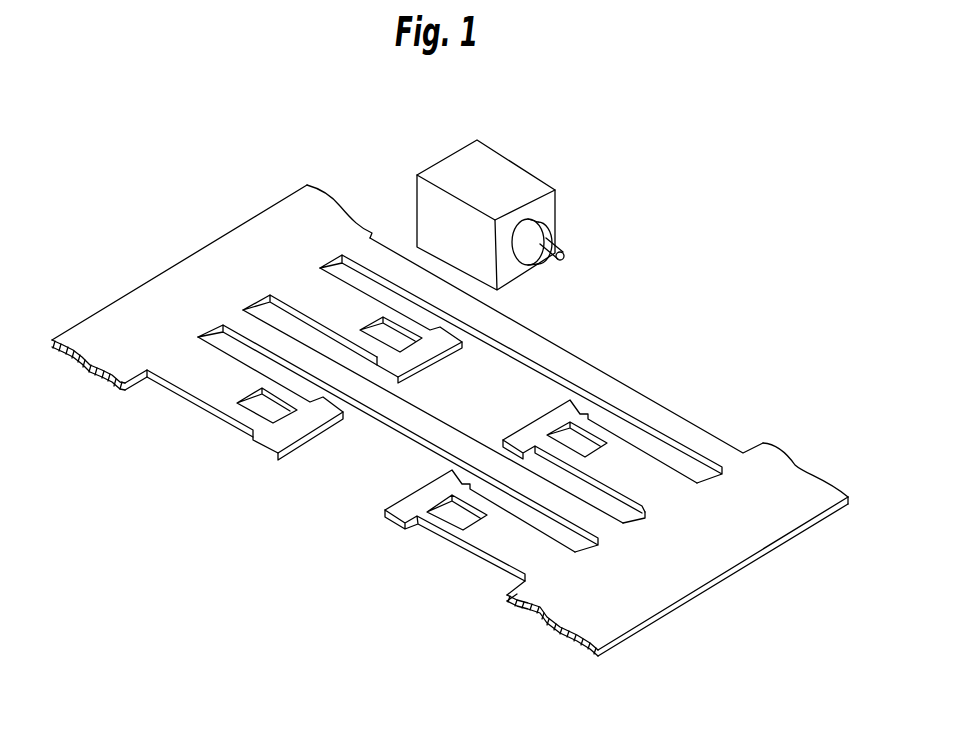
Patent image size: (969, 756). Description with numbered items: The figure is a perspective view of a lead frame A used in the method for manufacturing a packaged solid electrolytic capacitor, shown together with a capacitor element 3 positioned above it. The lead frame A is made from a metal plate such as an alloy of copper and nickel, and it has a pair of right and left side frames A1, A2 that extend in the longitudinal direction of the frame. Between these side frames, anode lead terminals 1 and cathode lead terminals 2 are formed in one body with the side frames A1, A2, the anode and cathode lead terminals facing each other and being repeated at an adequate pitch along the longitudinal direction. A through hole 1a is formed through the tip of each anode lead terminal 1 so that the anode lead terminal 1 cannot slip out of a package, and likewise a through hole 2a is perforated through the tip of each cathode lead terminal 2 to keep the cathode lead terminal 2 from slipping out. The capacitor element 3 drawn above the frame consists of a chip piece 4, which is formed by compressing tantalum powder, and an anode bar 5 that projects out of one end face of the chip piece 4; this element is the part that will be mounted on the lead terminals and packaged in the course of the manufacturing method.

The lead frame A is at (269, 170).
The side frame A1 is at (735, 540).
The side frame A2 is at (213, 256).
The anode lead terminal 1 is at (627, 480).
The through hole 1a is at (582, 440).
The cathode lead terminal 2 is at (237, 362).
The through hole 2a is at (250, 420).
The capacitor element 3 is at (533, 146).
The chip piece 4 is at (528, 185).
The anode bar 5 is at (560, 252).